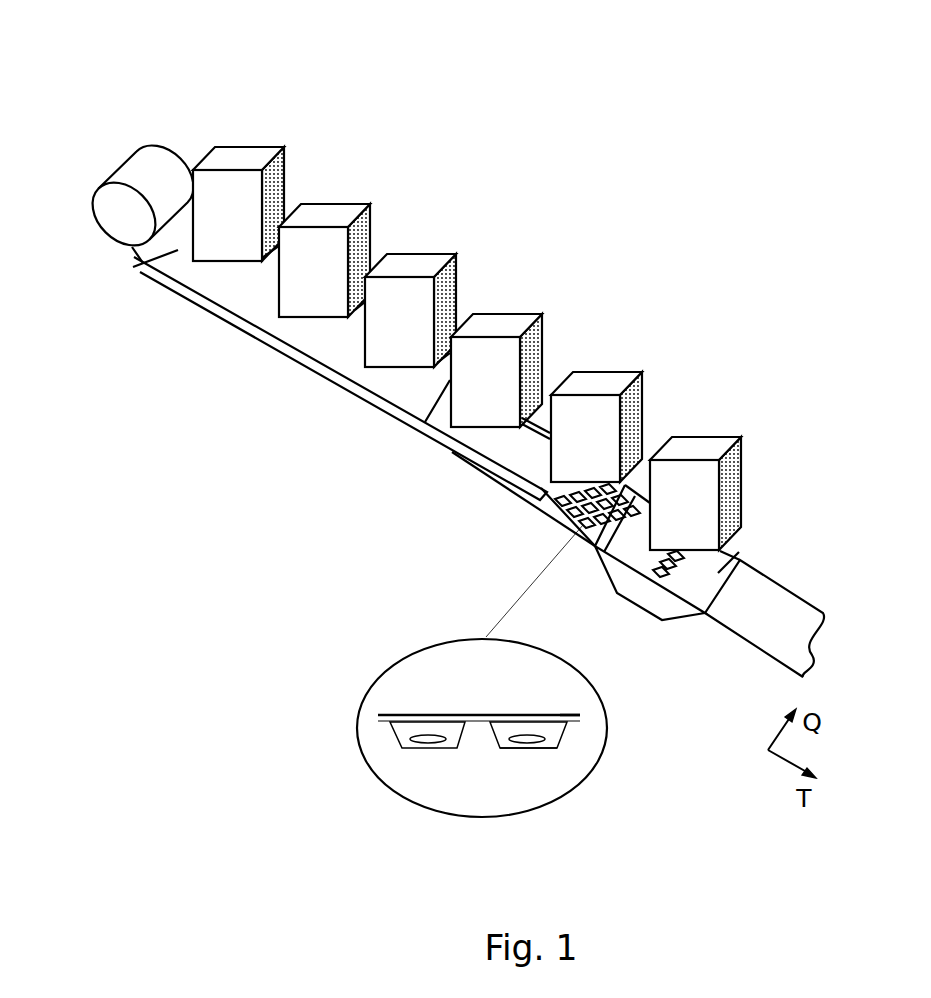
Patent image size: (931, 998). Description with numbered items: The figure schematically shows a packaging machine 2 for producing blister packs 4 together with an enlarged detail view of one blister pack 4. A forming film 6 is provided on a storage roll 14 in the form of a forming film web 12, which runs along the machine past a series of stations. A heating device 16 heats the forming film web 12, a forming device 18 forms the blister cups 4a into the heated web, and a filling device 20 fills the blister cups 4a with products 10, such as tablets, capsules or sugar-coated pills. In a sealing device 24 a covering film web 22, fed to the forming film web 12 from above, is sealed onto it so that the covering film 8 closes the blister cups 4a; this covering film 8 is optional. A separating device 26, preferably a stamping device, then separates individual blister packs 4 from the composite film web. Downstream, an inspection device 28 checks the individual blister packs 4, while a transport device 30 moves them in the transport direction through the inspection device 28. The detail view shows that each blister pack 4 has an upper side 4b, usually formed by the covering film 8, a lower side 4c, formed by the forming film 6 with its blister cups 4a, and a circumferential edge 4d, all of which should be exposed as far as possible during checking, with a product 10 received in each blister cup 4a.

The packaging machine 2 is at (670, 152).
The blister pack 4 is at (565, 515).
The blister cup 4a is at (417, 748).
The upper side 4b is at (528, 682).
The lower side 4c is at (528, 765).
The circumferential edge 4d is at (582, 717).
The forming film 6 is at (383, 727).
The covering film 8 is at (395, 717).
The product 10 is at (435, 740).
The forming film web 12 is at (137, 267).
The storage roll 14 is at (145, 163).
The heating device 16 is at (252, 155).
The forming device 18 is at (327, 218).
The filling device 20 is at (412, 263).
The covering film web 22 is at (472, 437).
The sealing device 24 is at (492, 320).
The separating device 26 is at (592, 378).
The inspection device 28 is at (688, 445).
The transport device 30 is at (733, 552).